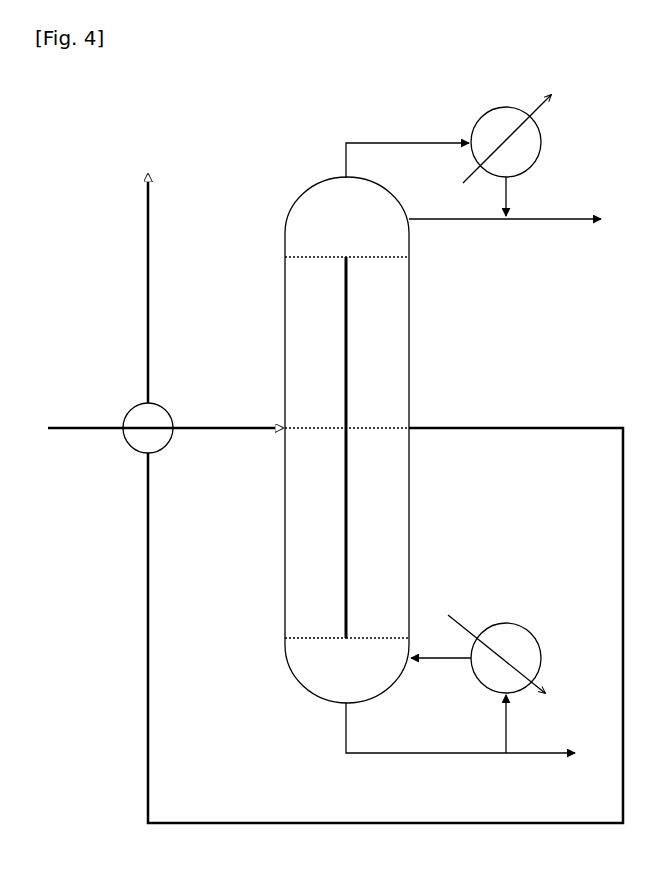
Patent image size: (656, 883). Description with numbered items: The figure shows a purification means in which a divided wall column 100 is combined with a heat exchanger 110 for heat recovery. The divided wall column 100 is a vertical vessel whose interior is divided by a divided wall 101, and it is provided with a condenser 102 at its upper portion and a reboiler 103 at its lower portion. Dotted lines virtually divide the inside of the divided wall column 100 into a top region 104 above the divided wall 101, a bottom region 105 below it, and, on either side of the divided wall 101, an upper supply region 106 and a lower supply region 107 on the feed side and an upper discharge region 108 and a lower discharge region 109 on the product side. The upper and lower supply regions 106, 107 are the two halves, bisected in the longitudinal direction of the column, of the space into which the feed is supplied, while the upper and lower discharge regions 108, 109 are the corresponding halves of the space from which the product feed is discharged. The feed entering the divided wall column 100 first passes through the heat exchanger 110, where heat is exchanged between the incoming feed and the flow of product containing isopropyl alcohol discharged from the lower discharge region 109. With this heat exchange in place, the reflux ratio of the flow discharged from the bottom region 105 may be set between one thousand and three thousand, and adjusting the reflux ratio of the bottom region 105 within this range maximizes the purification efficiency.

The divided wall column 100 is at (288, 186).
The divided wall 101 is at (346, 368).
The condenser 102 is at (541, 142).
The reboiler 103 is at (527, 628).
The top region 104 is at (333, 212).
The bottom region 105 is at (332, 660).
The upper supply region 106 is at (298, 340).
The lower supply region 107 is at (310, 527).
The upper discharge region 108 is at (392, 395).
The lower discharge region 109 is at (390, 521).
The heat exchanger 110 is at (137, 417).